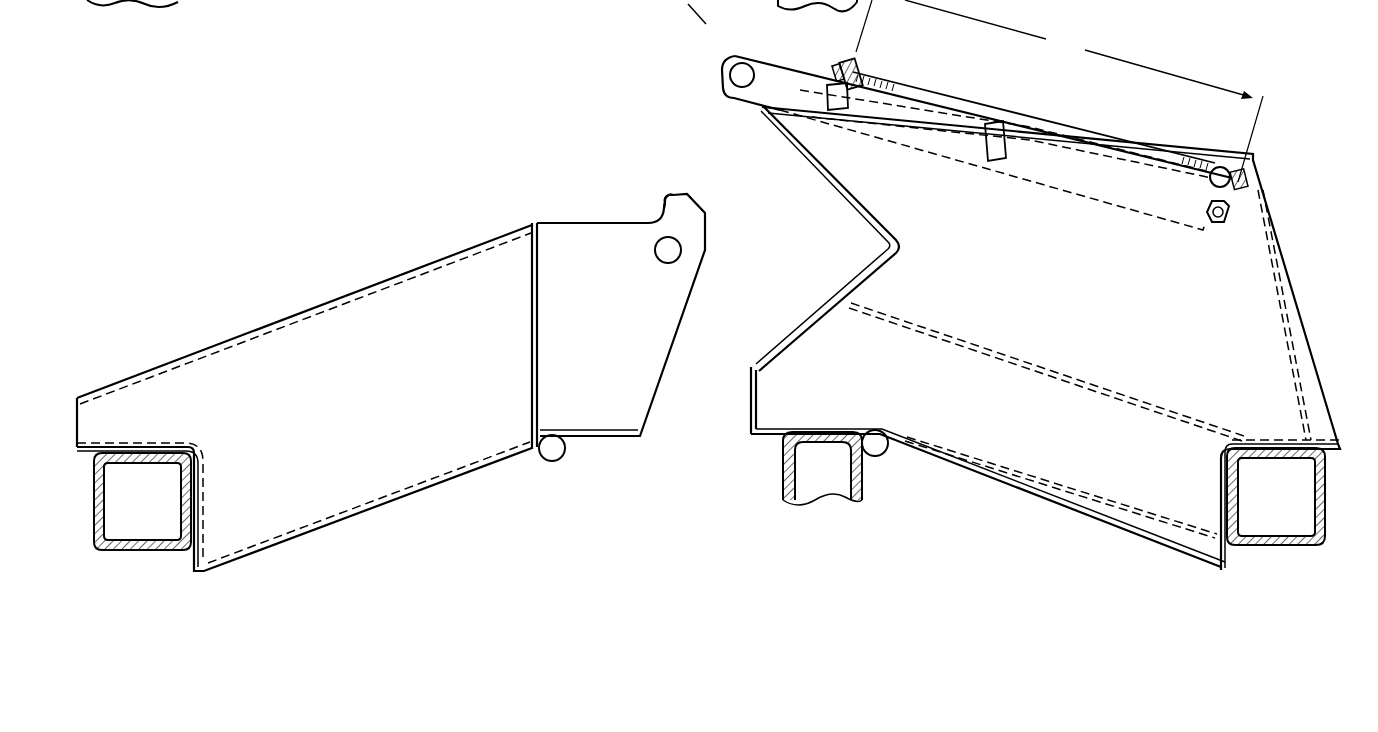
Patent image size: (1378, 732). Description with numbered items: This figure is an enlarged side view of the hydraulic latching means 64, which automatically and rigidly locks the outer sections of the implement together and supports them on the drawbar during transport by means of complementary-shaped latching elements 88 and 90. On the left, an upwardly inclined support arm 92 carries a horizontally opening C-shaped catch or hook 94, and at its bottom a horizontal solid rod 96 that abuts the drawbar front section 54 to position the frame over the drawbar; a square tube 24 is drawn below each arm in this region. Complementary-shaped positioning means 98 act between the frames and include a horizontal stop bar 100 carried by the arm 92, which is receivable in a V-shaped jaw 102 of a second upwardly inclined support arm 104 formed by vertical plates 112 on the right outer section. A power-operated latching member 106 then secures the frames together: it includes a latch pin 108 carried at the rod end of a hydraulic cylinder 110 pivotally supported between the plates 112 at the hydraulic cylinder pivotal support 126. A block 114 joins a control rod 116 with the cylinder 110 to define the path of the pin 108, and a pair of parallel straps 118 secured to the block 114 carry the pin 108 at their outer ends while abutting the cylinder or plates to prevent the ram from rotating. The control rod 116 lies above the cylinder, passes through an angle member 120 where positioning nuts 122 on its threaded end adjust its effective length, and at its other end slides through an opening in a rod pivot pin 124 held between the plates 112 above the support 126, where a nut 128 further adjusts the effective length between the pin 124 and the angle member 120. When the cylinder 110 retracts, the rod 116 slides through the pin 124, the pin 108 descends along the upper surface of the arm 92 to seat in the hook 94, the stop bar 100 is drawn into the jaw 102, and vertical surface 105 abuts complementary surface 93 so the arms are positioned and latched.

The square tubular frame member 24 is at (165, 560).
The drawbar front section 54 is at (783, 470).
The hydraulic latching means 64 is at (683, 14).
The latching element 88 is at (629, 198).
The latching element 90 is at (1144, 133).
The support arm 92 is at (328, 397).
The complementary surface 93 is at (538, 407).
The C-shaped catch or hook 94 is at (667, 194).
The rod 96 is at (555, 459).
The positioning means 98 is at (834, 250).
The horizontal stop bar 100 is at (673, 259).
The V-shaped jaw 102 is at (858, 205).
The second support arm 104 is at (1064, 505).
The vertical surface 105 is at (752, 399).
The latching member 106 is at (967, 123).
The latch pin 108 is at (748, 84).
The hydraulic cylinder 110 is at (1074, 196).
The vertical plates 112 is at (1117, 323).
The block 114 is at (824, 95).
The control rod 116 is at (938, 101).
The parallel straps 118 is at (924, 143).
The angle member 120 is at (858, 60).
The positioning nuts 122 is at (851, 61).
The rod pivot pin 124 is at (1212, 182).
The hydraulic cylinder pivotal support 126 is at (1228, 220).
The nut 128 is at (1249, 173).